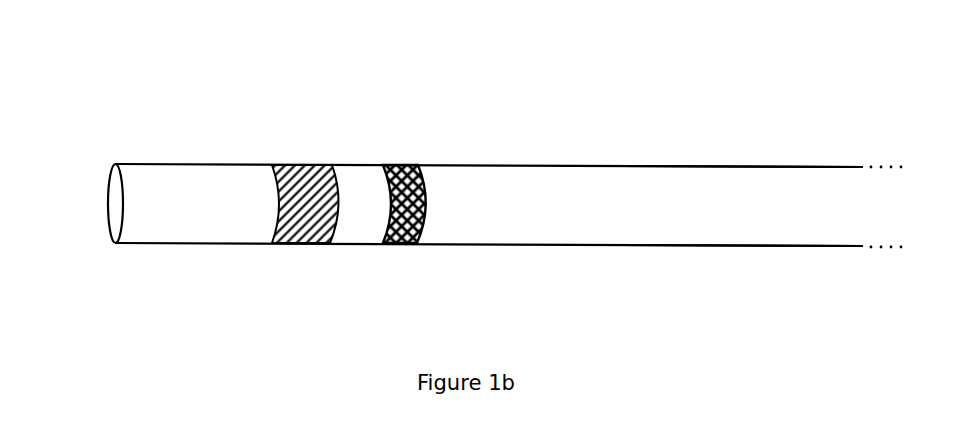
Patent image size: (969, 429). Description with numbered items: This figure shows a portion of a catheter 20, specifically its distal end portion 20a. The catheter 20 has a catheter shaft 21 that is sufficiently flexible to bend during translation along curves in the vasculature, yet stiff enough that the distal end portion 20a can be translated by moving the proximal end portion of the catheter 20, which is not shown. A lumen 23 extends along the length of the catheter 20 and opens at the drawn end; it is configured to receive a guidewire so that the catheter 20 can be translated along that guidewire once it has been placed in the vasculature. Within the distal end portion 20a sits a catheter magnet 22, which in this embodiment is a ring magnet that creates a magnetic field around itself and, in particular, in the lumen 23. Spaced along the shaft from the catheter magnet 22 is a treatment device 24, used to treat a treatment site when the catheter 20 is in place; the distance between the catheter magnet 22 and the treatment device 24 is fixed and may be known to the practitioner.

The catheter 20 is at (472, 179).
The distal end portion 20a is at (620, 259).
The catheter shaft 21 is at (205, 256).
The catheter magnet 22 is at (300, 243).
The lumen 23 is at (123, 203).
The treatment device 24 is at (398, 243).